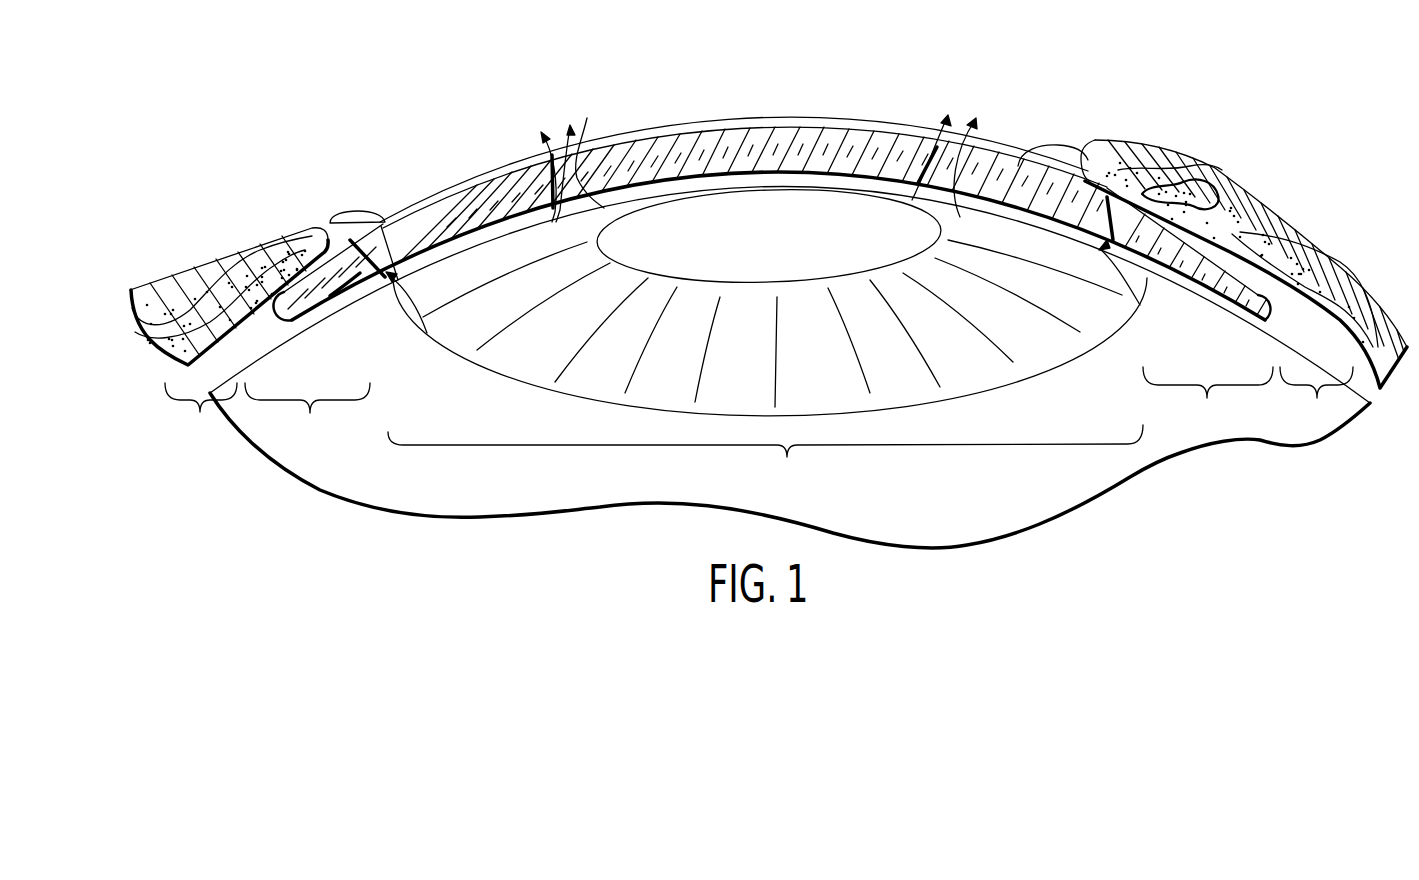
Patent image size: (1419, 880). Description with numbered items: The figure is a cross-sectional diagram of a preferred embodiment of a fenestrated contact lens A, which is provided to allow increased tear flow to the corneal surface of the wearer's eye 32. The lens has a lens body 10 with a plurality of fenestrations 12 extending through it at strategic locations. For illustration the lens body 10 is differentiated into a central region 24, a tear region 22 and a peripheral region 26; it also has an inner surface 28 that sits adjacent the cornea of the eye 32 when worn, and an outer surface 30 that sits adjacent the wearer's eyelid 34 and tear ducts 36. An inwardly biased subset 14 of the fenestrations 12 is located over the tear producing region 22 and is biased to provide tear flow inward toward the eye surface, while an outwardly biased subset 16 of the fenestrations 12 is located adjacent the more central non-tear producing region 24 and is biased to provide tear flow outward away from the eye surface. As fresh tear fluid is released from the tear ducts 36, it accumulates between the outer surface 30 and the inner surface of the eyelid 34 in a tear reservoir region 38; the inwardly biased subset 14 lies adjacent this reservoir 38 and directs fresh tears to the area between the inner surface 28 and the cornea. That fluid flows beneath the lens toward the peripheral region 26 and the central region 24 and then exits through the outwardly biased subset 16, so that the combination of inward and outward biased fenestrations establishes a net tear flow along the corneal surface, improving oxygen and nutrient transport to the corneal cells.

The fenestrated contact lens A is at (703, 113).
The lens body 10 is at (836, 140).
The fenestrations 12 is at (973, 157).
The inwardly biased subset of fenestrations 14 is at (381, 246).
The outwardly biased subset of fenestrations 16 is at (597, 106).
The tear region 22 is at (759, 408).
The central region 24 is at (765, 459).
The peripheral region 26 is at (759, 408).
The inner surface 28 is at (353, 298).
The outer surface 30 is at (757, 125).
The wearer's eye 32 is at (1021, 488).
The eyelid 34 is at (180, 276).
The tear ducts 36 is at (1213, 180).
The tear reservoir region 38 is at (340, 220).